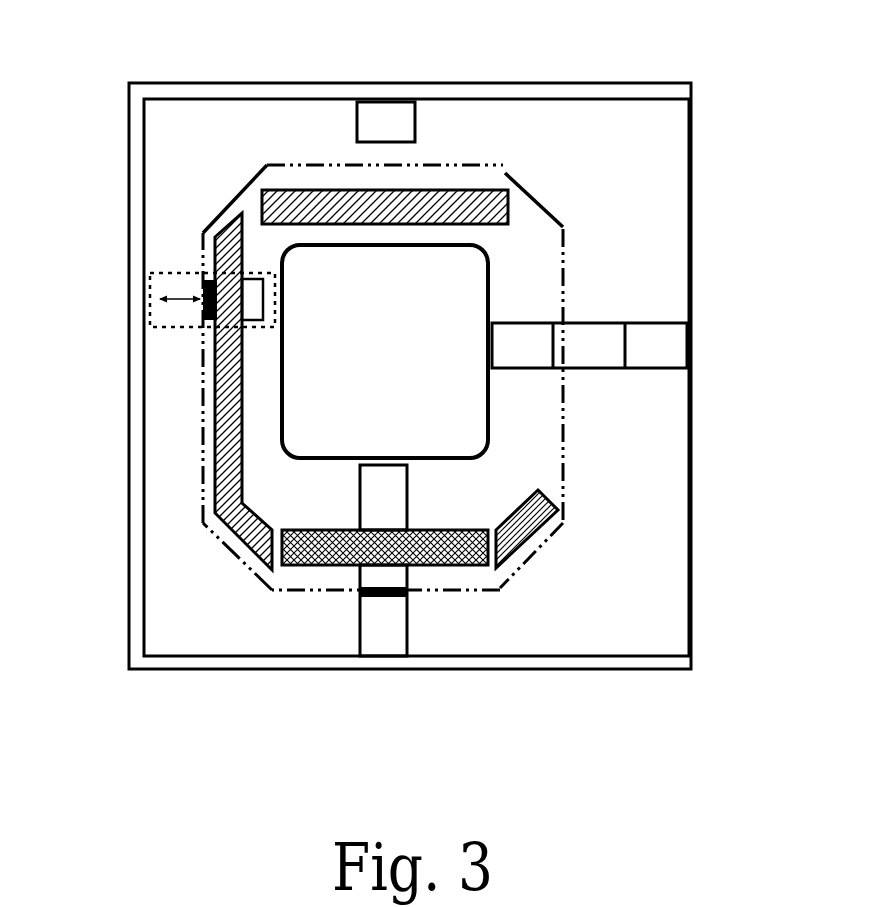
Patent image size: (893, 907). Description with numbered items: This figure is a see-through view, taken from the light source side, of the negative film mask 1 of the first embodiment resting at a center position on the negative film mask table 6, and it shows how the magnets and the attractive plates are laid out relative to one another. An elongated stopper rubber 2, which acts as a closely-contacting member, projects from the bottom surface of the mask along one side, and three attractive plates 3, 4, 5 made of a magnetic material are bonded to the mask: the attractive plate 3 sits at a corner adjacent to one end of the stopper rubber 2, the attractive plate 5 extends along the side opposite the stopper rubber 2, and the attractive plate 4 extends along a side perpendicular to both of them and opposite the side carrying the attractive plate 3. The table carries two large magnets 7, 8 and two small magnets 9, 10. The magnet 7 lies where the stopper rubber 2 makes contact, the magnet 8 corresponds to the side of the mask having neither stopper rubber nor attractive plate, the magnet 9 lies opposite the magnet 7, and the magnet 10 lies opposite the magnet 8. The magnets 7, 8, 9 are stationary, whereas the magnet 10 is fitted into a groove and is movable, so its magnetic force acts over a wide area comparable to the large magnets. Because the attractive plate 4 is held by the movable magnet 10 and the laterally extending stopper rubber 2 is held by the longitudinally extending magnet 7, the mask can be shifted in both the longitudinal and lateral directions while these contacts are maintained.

The negative film mask 1 is at (548, 199).
The stopper rubber 2 is at (330, 563).
The attractive plate 3 is at (528, 528).
The attractive plate 4 is at (227, 445).
The attractive plate 5 is at (323, 198).
The negative film mask table 6 is at (698, 620).
The magnet 7 is at (397, 615).
The magnet 8 is at (648, 335).
The magnet 9 is at (378, 112).
The magnet 10 is at (233, 290).